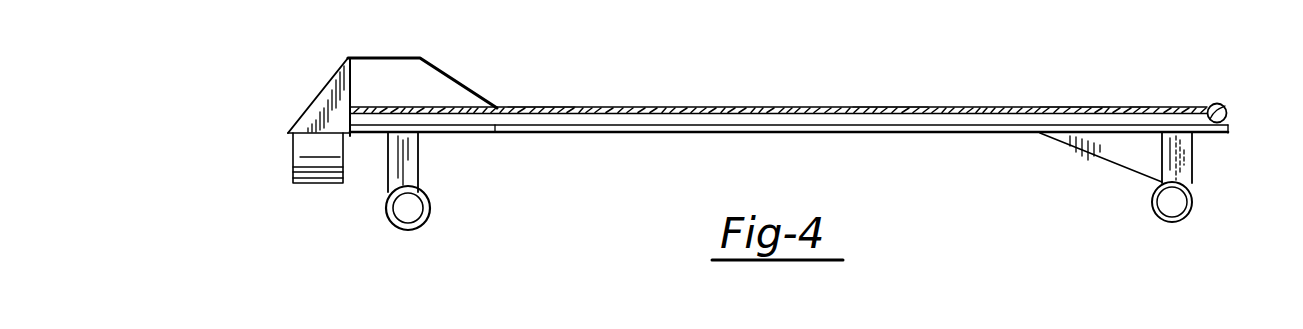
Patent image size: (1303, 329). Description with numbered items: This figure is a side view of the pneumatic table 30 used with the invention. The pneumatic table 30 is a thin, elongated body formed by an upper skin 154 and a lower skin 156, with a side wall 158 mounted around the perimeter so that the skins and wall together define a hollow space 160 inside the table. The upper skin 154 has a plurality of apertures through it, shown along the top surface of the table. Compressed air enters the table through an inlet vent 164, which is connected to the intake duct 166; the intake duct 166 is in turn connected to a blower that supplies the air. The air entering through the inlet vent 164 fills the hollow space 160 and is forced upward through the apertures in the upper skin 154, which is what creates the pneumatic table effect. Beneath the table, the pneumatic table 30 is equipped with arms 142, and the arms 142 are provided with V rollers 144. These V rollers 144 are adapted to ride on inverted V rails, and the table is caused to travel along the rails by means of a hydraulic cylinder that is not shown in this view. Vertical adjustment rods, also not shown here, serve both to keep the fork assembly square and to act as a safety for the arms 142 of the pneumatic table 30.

The pneumatic table 30 is at (1138, 106).
The arms 142 is at (1187, 162).
The "V" rollers 144 is at (1180, 206).
The upper skin 154 is at (972, 107).
The lower skin 156 is at (940, 135).
The side wall 158 is at (1238, 82).
The hollow space 160 is at (872, 117).
The inlet vent 164 is at (370, 76).
The intake duct 166 is at (312, 183).